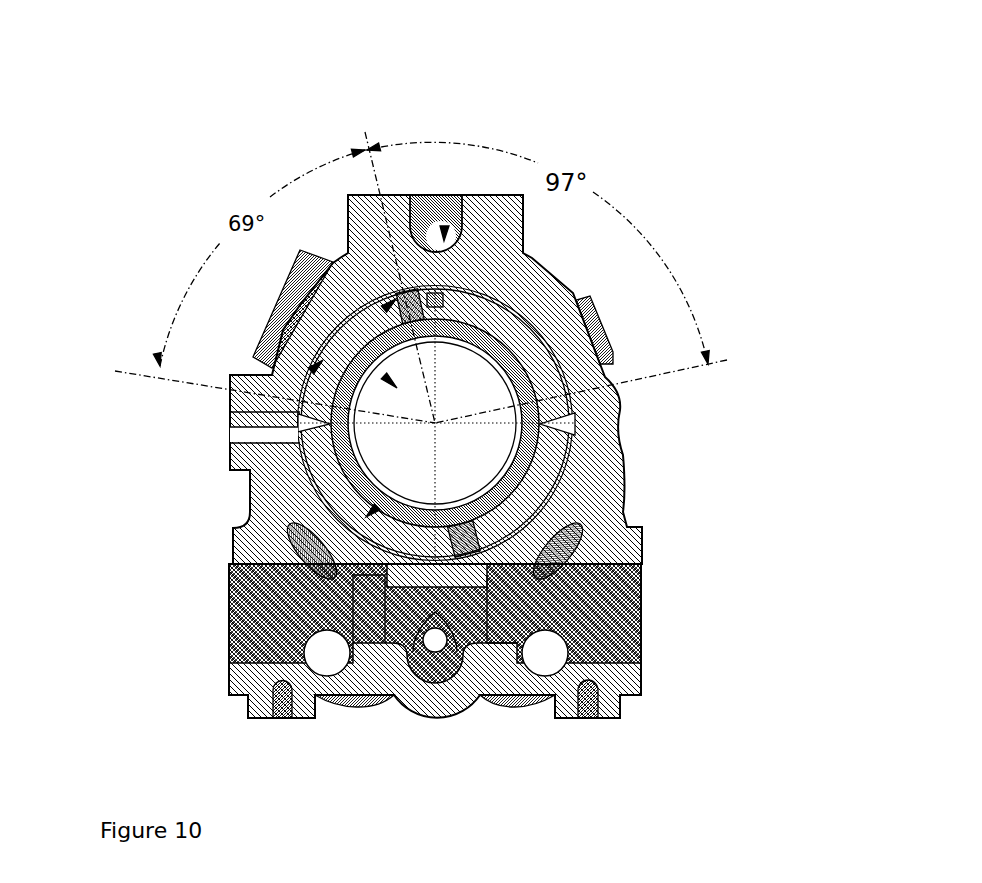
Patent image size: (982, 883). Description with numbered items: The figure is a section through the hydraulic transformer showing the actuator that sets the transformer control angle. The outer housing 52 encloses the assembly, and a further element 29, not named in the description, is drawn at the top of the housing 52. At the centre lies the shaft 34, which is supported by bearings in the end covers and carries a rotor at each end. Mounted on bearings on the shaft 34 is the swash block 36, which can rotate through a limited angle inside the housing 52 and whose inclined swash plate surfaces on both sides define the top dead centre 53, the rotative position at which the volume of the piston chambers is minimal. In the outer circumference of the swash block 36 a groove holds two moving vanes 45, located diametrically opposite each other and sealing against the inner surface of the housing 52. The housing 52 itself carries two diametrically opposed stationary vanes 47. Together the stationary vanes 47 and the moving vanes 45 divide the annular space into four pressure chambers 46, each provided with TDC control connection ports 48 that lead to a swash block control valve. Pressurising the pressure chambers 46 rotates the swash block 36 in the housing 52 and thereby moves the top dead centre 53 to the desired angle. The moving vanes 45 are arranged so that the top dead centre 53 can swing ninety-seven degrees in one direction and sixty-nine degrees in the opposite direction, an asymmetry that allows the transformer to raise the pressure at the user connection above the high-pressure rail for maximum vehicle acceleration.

The spherical seat notch 29 is at (441, 195).
The top dead centre 53 is at (447, 283).
The housing 52 is at (543, 273).
The moving vanes 45 is at (335, 262).
The shaft 34 is at (290, 310).
The pressure chambers 46 is at (262, 345).
The TDC control connection ports 48 is at (284, 429).
The stationary vanes 47 is at (580, 418).
The swash block 36 is at (229, 592).